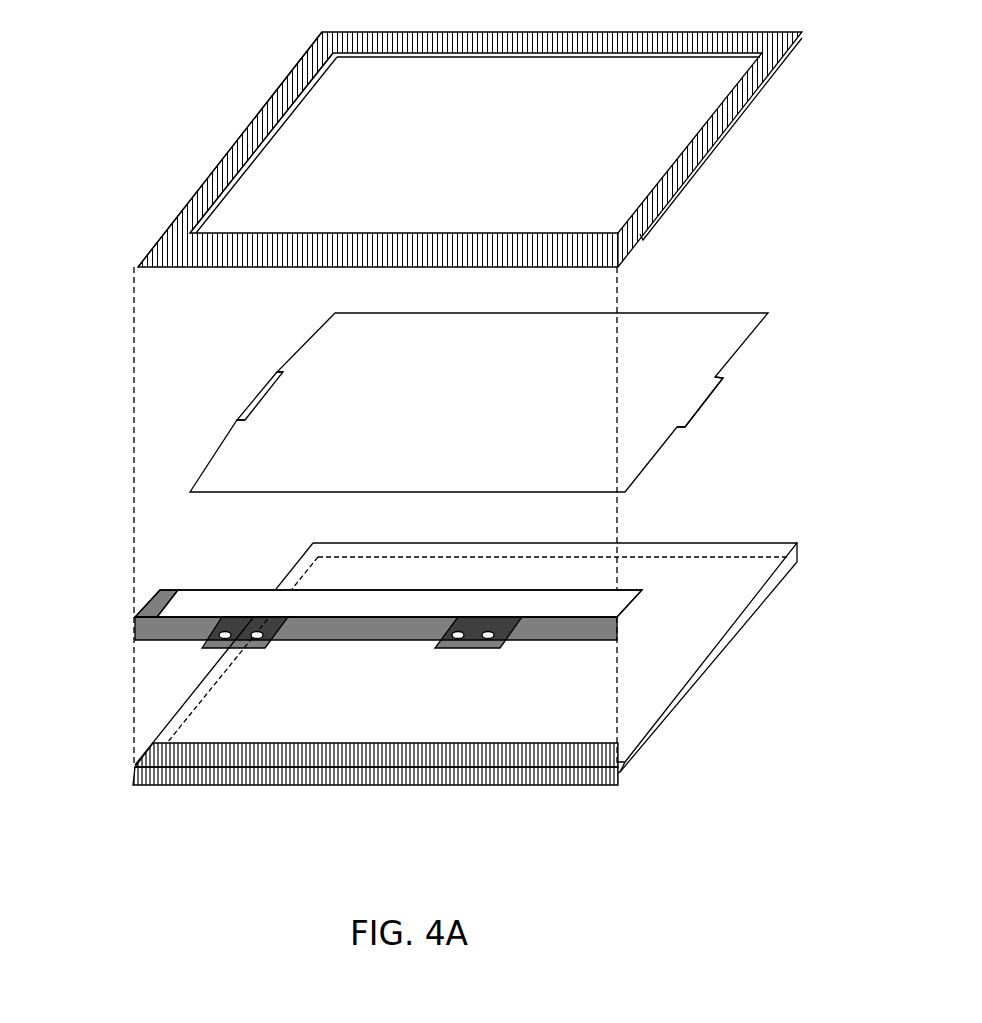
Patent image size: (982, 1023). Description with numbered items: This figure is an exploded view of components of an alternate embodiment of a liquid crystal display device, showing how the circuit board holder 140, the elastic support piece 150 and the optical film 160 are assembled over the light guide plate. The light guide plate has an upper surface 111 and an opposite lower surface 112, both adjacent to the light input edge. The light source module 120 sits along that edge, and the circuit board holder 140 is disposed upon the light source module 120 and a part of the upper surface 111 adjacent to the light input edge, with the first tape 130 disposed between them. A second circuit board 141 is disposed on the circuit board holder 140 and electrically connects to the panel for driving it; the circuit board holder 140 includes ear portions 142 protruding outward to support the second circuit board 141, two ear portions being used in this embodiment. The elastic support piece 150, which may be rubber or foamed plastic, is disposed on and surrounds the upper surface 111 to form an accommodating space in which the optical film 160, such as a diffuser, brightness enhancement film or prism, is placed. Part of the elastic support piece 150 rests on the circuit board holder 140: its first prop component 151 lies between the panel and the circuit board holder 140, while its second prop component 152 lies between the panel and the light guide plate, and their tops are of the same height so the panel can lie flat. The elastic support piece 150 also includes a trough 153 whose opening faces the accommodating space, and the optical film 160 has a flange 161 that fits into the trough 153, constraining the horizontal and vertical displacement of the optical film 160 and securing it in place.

The upper surface 111 is at (697, 631).
The lower surface 112 is at (718, 675).
The light source module 120 is at (627, 764).
The first tape 130 is at (147, 762).
The circuit board holder 140 is at (357, 608).
The second circuit board 141 is at (257, 593).
The ear portion 142 is at (438, 647).
The elastic support piece 150 is at (433, 149).
The first prop component 151 is at (158, 252).
The second prop component 152 is at (222, 175).
The trough 153 is at (268, 153).
The optical film 160 is at (476, 402).
The flange 161 is at (246, 392).